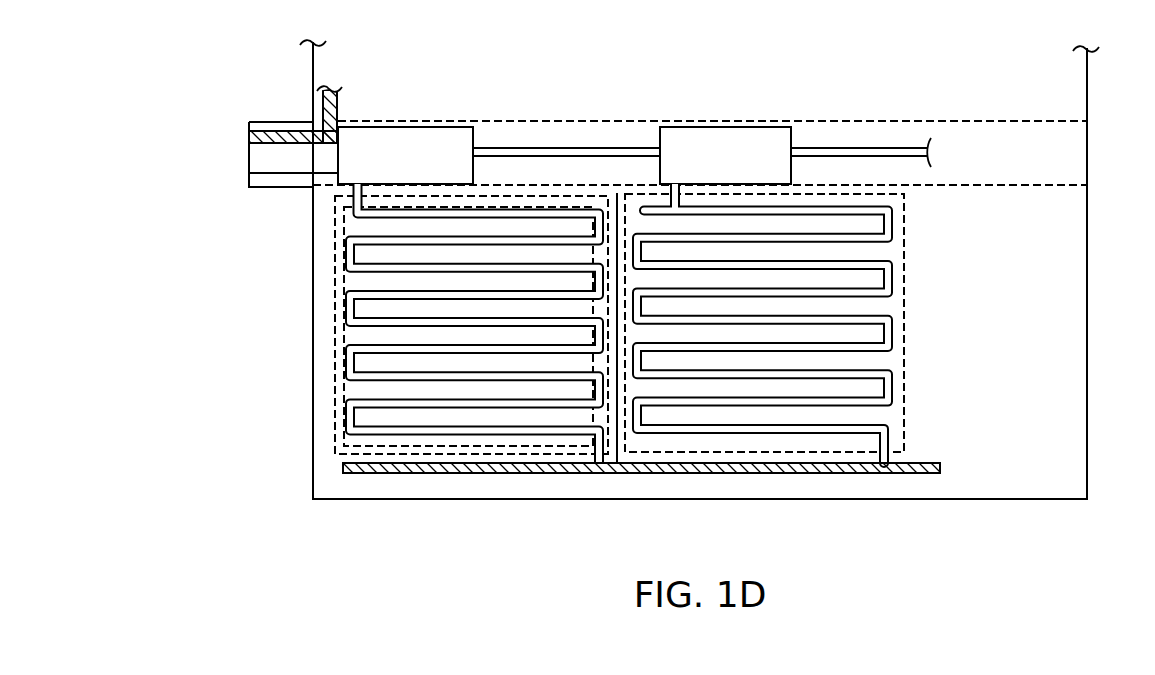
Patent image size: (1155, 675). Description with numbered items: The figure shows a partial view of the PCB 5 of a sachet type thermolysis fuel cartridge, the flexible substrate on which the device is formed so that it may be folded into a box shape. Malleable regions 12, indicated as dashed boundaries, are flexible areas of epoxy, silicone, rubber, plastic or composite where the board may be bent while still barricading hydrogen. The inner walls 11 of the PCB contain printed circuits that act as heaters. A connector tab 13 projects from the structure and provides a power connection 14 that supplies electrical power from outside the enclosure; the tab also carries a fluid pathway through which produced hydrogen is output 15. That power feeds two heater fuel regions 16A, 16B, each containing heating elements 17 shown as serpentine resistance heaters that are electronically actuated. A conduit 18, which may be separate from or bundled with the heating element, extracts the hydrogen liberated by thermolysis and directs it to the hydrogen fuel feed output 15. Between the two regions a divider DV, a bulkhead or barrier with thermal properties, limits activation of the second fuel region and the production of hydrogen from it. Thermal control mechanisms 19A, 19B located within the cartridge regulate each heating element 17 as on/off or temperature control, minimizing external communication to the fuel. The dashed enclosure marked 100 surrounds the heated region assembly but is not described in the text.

The PCB 5 is at (1088, 75).
The inner walls 11 is at (1050, 152).
The malleable regions 12 is at (556, 120).
The tab 13 is at (266, 160).
The power connection 14 is at (280, 176).
The hydrogen fuel feed output 15 is at (281, 126).
The heater for fuel region 16A is at (332, 249).
The heater for fuel region 16B is at (905, 230).
The heating elements 17 is at (358, 332).
The conduit 18 is at (936, 465).
The thermal control mechanism 19A is at (422, 147).
The thermal control mechanism 19B is at (709, 148).
The heat exchange assembly 100 is at (340, 428).
The divider DV is at (613, 437).